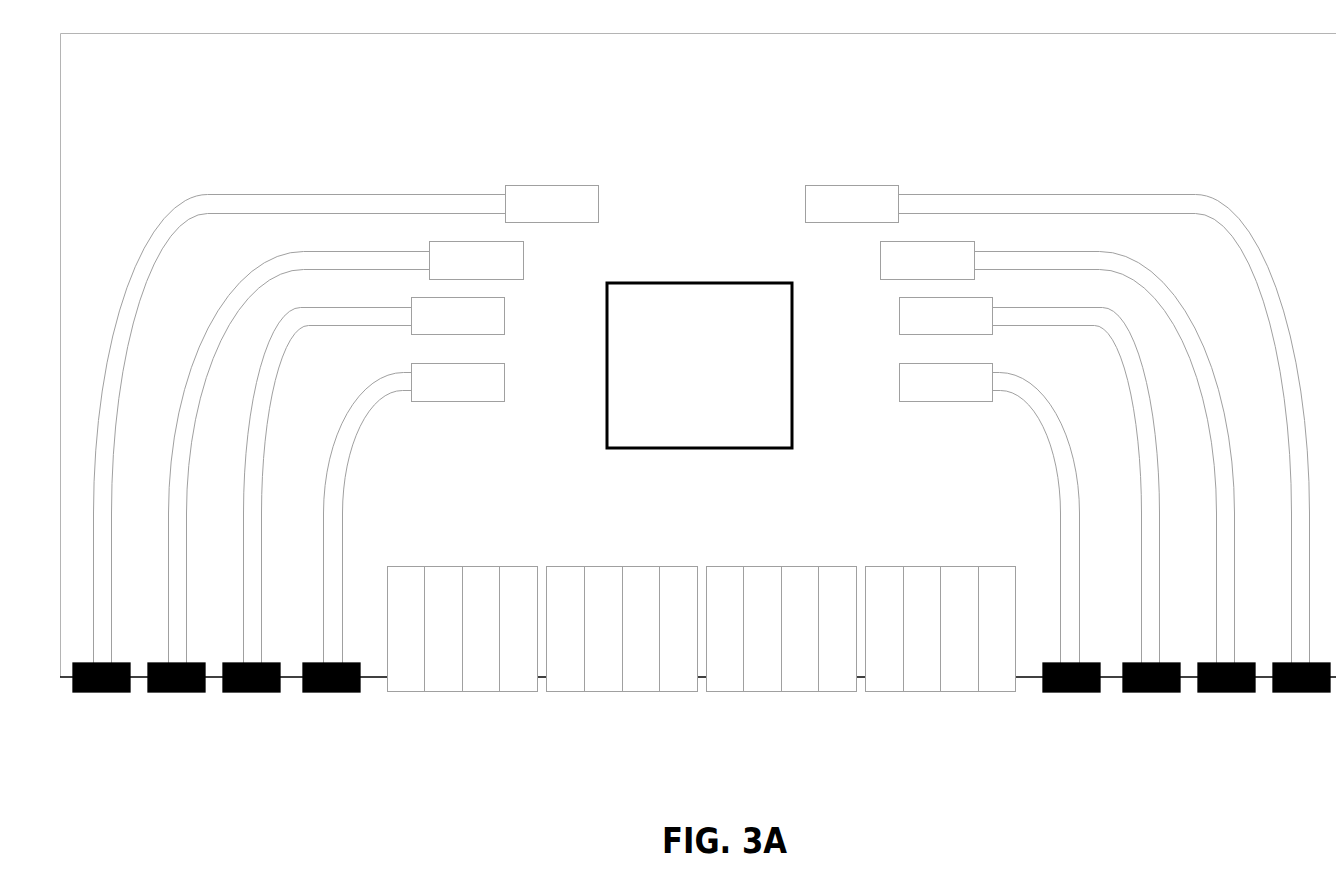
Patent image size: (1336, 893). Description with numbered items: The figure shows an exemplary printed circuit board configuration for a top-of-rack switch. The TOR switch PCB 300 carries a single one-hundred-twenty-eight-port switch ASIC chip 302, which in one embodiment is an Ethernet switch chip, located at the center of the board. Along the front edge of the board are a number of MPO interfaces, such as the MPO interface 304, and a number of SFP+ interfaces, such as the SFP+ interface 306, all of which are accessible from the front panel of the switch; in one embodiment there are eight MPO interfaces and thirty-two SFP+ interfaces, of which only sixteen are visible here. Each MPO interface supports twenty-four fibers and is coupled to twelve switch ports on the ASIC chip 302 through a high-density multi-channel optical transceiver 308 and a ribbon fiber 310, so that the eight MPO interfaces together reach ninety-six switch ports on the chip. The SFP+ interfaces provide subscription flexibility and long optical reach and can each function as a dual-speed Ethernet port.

The TOR switch PCB 300 is at (825, 97).
The 128-port switch ASIC chip 302 is at (699, 365).
The MPO interface 304 is at (102, 692).
The SFP+ interface 306 is at (404, 692).
The high-density multi-channel optical transceiver 308 is at (557, 185).
The ribbon fiber 310 is at (210, 193).